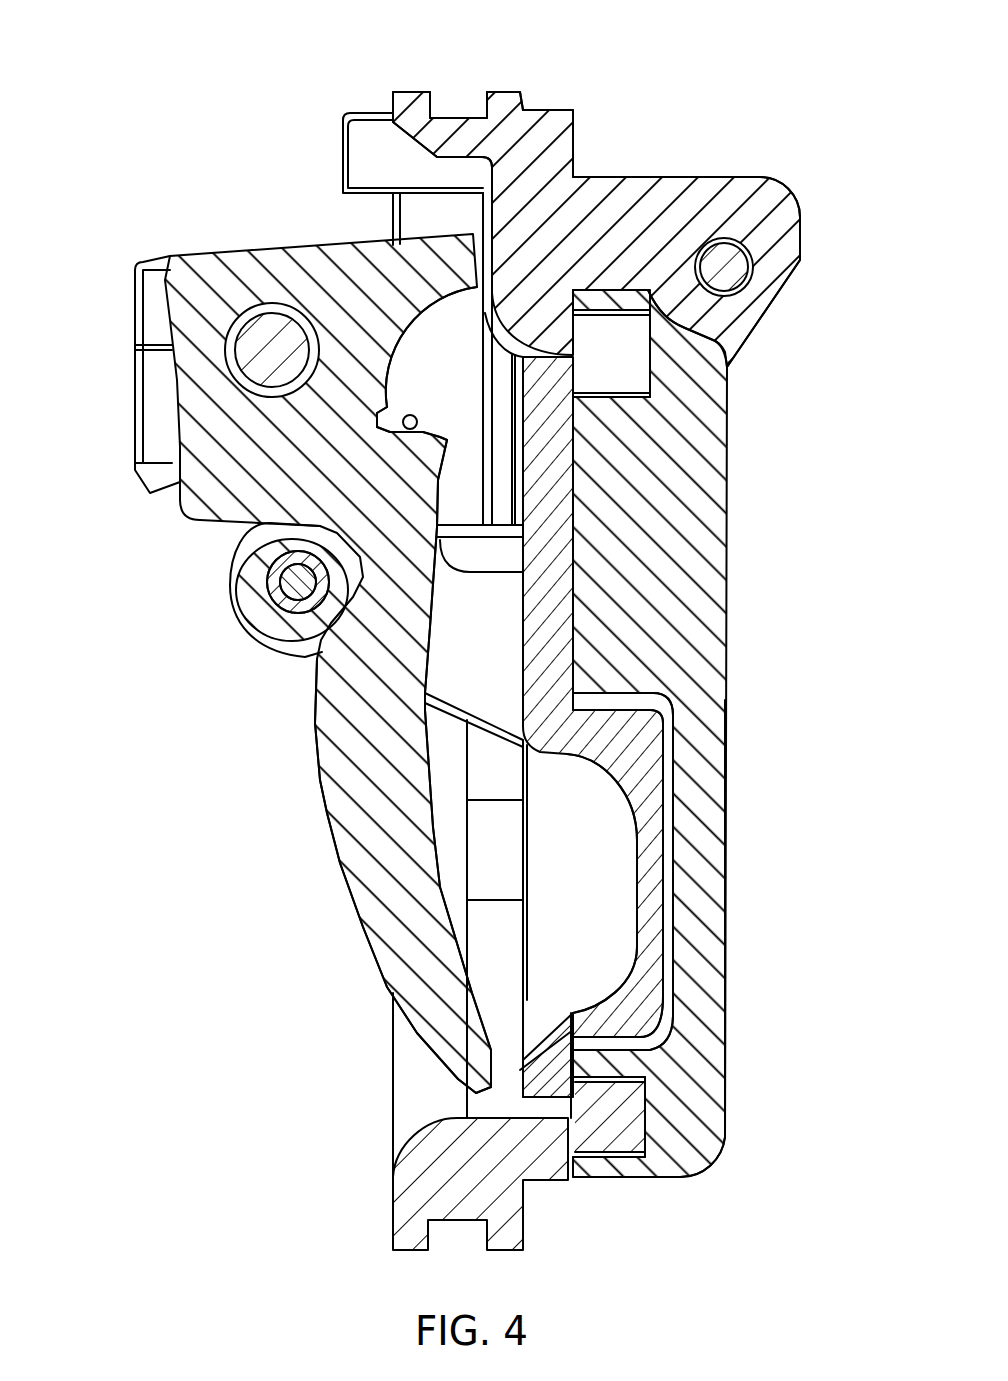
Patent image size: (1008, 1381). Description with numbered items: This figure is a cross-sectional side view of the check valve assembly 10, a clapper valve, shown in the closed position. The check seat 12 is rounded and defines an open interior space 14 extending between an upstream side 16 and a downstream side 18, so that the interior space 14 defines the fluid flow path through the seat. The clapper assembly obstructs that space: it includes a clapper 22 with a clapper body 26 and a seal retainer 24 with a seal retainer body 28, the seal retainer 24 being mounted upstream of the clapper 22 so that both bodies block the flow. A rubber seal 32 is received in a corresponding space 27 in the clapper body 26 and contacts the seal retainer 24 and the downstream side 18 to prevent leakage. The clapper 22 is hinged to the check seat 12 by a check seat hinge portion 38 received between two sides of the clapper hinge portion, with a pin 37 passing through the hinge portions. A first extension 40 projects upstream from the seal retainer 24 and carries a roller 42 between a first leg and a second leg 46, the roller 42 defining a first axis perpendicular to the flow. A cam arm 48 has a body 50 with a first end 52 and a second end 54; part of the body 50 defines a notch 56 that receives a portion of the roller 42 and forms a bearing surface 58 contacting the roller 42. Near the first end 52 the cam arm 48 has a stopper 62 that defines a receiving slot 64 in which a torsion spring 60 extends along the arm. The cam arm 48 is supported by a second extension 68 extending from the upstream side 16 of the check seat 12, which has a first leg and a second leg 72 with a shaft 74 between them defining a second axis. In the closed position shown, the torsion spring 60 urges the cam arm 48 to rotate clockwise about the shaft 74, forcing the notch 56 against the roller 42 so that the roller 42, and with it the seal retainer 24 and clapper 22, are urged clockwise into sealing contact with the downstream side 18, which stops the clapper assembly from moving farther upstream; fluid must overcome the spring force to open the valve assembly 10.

The check valve assembly 10 is at (180, 72).
The check seat 12 is at (458, 140).
The interior space 14 is at (527, 1110).
The upstream side 16 is at (485, 213).
The downstream side 18 is at (577, 131).
The clapper 22 is at (697, 873).
The seal retainer 24 is at (640, 983).
The clapper body 26 is at (700, 790).
The corresponding space 27 is at (652, 345).
The seal retainer body 28 is at (573, 463).
The rubber seal 32 is at (617, 1140).
The pin 37 is at (740, 273).
The check seat hinge portion 38 is at (718, 197).
The first extension 40 is at (483, 607).
The roller 42 is at (277, 580).
The second leg 46 is at (483, 690).
The cam arm 48 is at (350, 783).
The body 50 is at (353, 850).
The first end 52 is at (250, 270).
The second end 54 is at (387, 935).
The notch 56 is at (293, 547).
The bearing surface 58 is at (340, 600).
The torsion spring 60 is at (403, 421).
The stopper 62 is at (433, 267).
The receiving slot 64 is at (400, 367).
The second extension 68 is at (150, 327).
The second leg 72 is at (155, 287).
The shaft 74 is at (270, 357).